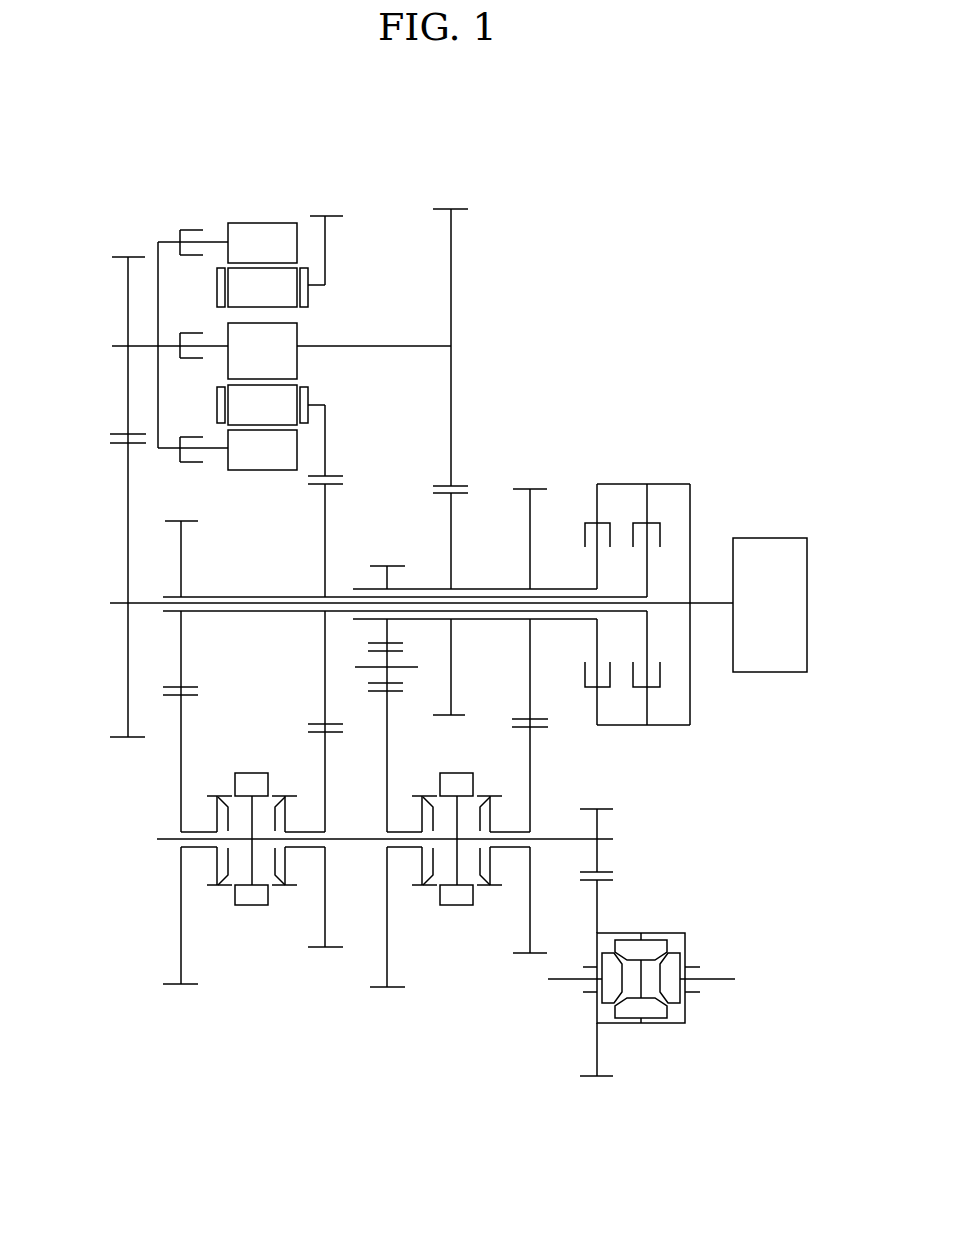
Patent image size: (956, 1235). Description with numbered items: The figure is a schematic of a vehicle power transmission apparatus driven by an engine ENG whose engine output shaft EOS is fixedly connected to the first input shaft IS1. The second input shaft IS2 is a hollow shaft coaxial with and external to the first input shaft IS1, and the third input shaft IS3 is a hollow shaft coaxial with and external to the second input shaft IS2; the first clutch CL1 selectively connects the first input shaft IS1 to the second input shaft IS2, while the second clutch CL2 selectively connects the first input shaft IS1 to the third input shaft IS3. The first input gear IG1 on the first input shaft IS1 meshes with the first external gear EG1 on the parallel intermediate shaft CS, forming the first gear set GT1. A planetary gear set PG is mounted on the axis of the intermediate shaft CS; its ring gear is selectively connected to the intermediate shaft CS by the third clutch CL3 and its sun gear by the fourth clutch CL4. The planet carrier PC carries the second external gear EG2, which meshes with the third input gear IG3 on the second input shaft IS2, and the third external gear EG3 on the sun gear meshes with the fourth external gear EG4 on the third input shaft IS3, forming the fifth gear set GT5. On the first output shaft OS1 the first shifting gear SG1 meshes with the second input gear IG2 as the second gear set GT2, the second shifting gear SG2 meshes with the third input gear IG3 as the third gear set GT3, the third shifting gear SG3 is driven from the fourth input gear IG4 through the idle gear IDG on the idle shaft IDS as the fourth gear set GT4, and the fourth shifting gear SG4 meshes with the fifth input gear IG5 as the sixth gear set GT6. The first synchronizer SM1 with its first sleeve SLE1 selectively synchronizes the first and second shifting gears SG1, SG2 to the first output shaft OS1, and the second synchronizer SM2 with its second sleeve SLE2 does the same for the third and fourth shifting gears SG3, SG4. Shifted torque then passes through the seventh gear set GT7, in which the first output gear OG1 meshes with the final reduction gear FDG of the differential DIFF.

The planetary gear set PG is at (240, 198).
The planet carrier PC is at (308, 392).
The fifth gear set GT5 is at (456, 200).
The first external gear EG1 is at (128, 281).
The fourth clutch CL4 is at (167, 331).
The intermediate shaft CS is at (140, 348).
The third clutch CL3 is at (168, 463).
The first input gear IG1 is at (128, 535).
The first gear set GT1 is at (124, 755).
The second input gear IG2 is at (182, 550).
The third input gear IG3 is at (325, 522).
The second external gear EG2 is at (326, 442).
The fourth input gear IG4 is at (382, 578).
The third external gear EG3 is at (452, 402).
The fourth external gear EG4 is at (451, 510).
The fifth input gear IG5 is at (530, 539).
The first input shaft IS1 is at (228, 612).
The second input shaft IS2 is at (277, 612).
The third input shaft IS3 is at (490, 620).
The second clutch CL2 is at (611, 510).
The first clutch CL1 is at (659, 510).
The engine output shaft EOS is at (713, 605).
The engine ENG is at (770, 605).
The idle shaft IDS is at (362, 668).
The idle gear IDG is at (403, 685).
The first shifting gear SG1 is at (183, 723).
The second shifting gear SG2 is at (325, 754).
The third shifting gear SG3 is at (388, 759).
The fourth shifting gear SG4 is at (531, 765).
The first output shaft OS1 is at (355, 842).
The first synchronizer SM1 is at (262, 918).
The first sleeve SLE1 is at (246, 906).
The second synchronizer SM2 is at (467, 918).
The second sleeve SLE2 is at (451, 906).
The second gear set GT2 is at (178, 1008).
The third gear set GT3 is at (321, 968).
The fourth gear set GT4 is at (384, 1008).
The sixth gear set GT6 is at (527, 975).
The first output gear OG1 is at (598, 826).
The final reduction gear FDG is at (598, 905).
The differential DIFF is at (708, 945).
The seventh gear set GT7 is at (596, 1096).